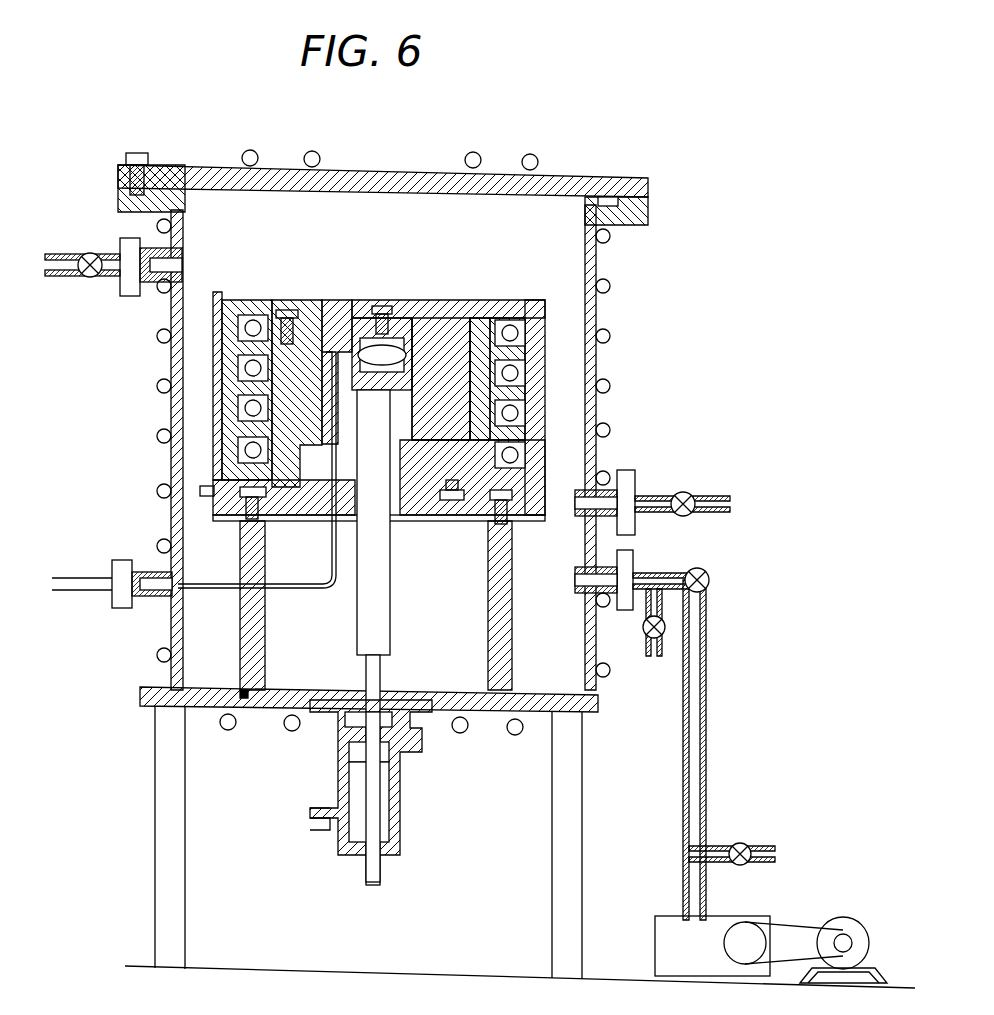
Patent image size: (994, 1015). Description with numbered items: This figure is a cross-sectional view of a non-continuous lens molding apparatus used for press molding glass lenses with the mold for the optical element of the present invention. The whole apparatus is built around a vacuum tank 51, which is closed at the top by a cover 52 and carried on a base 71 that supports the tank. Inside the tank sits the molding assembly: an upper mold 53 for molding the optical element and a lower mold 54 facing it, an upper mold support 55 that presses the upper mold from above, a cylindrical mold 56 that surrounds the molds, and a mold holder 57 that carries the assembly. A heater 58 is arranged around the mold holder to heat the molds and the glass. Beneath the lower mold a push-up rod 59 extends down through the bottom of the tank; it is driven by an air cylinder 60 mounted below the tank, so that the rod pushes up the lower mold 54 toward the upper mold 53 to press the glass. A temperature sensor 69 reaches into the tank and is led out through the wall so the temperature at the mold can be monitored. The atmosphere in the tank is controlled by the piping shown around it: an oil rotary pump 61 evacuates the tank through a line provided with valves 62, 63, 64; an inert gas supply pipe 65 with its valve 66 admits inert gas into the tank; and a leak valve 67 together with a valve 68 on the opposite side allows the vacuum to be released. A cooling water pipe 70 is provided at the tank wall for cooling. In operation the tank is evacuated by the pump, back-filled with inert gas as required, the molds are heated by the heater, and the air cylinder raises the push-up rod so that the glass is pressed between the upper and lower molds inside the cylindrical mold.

The vacuum tank 51 is at (600, 300).
The cover 52 is at (402, 168).
The upper mold 53 is at (352, 326).
The lower mold 54 is at (430, 325).
The upper mold support 55 is at (315, 312).
The cylindrical mold 56 is at (452, 340).
The mold holder 57 is at (482, 396).
The heater 58 is at (245, 365).
The push-up rod 59 is at (378, 604).
The air cylinder 60 is at (400, 806).
The oil rotary pump 61 is at (746, 938).
The valve 62 is at (708, 582).
The valve 63 is at (645, 640).
The valve 64 is at (748, 842).
The inert gas supply pipe 65 is at (598, 490).
The valve 66 is at (690, 492).
The leak valve 67 is at (118, 256).
The valve 68 is at (88, 278).
The temperature sensor 69 is at (322, 482).
The cooling water pipe 70 is at (612, 342).
The base 71 is at (176, 864).